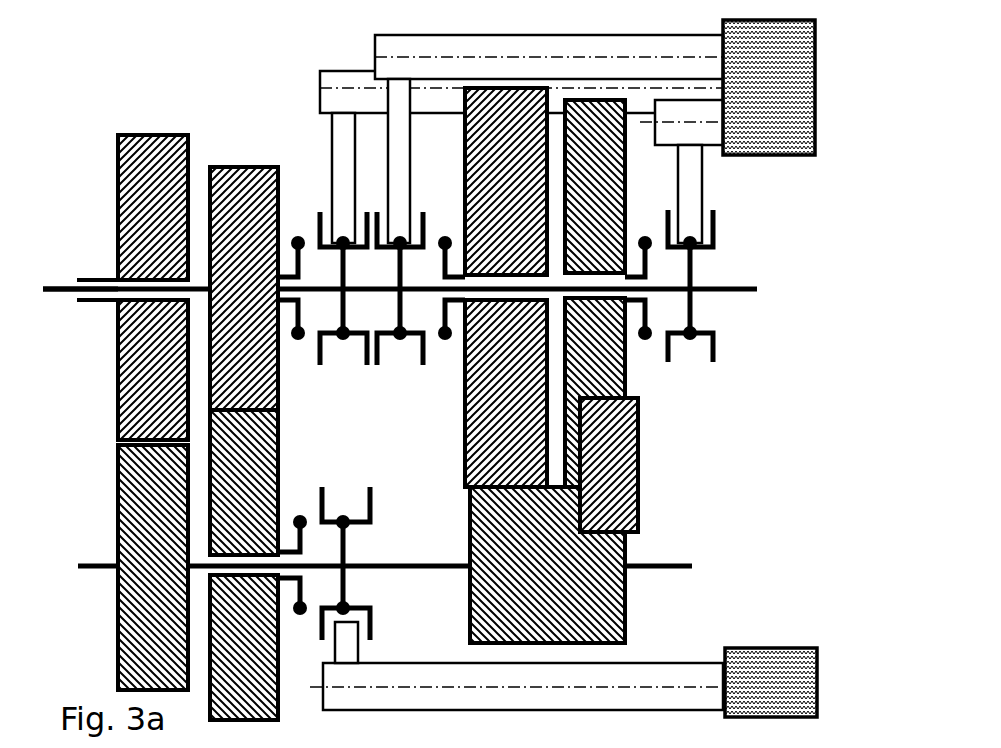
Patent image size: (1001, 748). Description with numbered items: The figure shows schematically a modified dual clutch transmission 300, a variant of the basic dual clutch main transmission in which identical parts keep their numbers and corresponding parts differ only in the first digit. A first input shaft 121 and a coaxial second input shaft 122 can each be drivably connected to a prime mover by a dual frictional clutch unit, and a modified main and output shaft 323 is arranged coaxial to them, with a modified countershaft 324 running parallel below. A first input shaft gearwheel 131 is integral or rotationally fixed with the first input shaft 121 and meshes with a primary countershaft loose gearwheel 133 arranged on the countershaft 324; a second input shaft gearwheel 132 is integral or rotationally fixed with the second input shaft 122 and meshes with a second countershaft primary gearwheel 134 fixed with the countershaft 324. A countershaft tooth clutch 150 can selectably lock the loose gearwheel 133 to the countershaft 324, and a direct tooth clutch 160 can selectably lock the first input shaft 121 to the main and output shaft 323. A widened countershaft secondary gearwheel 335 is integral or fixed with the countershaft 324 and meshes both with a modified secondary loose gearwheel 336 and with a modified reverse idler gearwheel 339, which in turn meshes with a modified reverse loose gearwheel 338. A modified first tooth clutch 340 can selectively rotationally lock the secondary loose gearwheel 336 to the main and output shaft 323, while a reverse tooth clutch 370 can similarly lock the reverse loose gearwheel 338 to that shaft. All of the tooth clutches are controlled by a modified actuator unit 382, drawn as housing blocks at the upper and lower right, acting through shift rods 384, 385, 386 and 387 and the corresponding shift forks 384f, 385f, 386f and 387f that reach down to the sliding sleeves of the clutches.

The modified dual clutch transmission 300 is at (126, 92).
The first input shaft 121 is at (66, 284).
The second input shaft 122 is at (83, 303).
The first input shaft gearwheel 131 is at (244, 361).
The second input shaft gearwheel 132 is at (117, 148).
The primary countershaft loose gearwheel 133 is at (244, 647).
The second countershaft primary gearwheel 134 is at (117, 633).
The countershaft tooth clutch 150 is at (311, 494).
The direct tooth clutch 160 is at (311, 356).
The modified main and output shaft 323 is at (727, 293).
The modified countershaft 324 is at (85, 562).
The widened countershaft secondary gearwheel 335 is at (547, 565).
The modified secondary loose gearwheel 336 is at (506, 287).
The modified reverse loose gearwheel 338 is at (595, 293).
The modified reverse idler gearwheel 339 is at (640, 507).
The modified first tooth clutch 340 is at (423, 381).
The reverse tooth clutch 370 is at (671, 378).
The modified actuator unit 382 is at (786, 646).
The shift rod 384 is at (375, 43).
The shift fork 384f is at (387, 100).
The shift rod 385 is at (660, 661).
The shift fork 385f is at (360, 652).
The shift rod 386 is at (318, 82).
The shift fork 386f is at (330, 145).
The shift rod 387 is at (714, 148).
The shift fork 387f is at (693, 179).